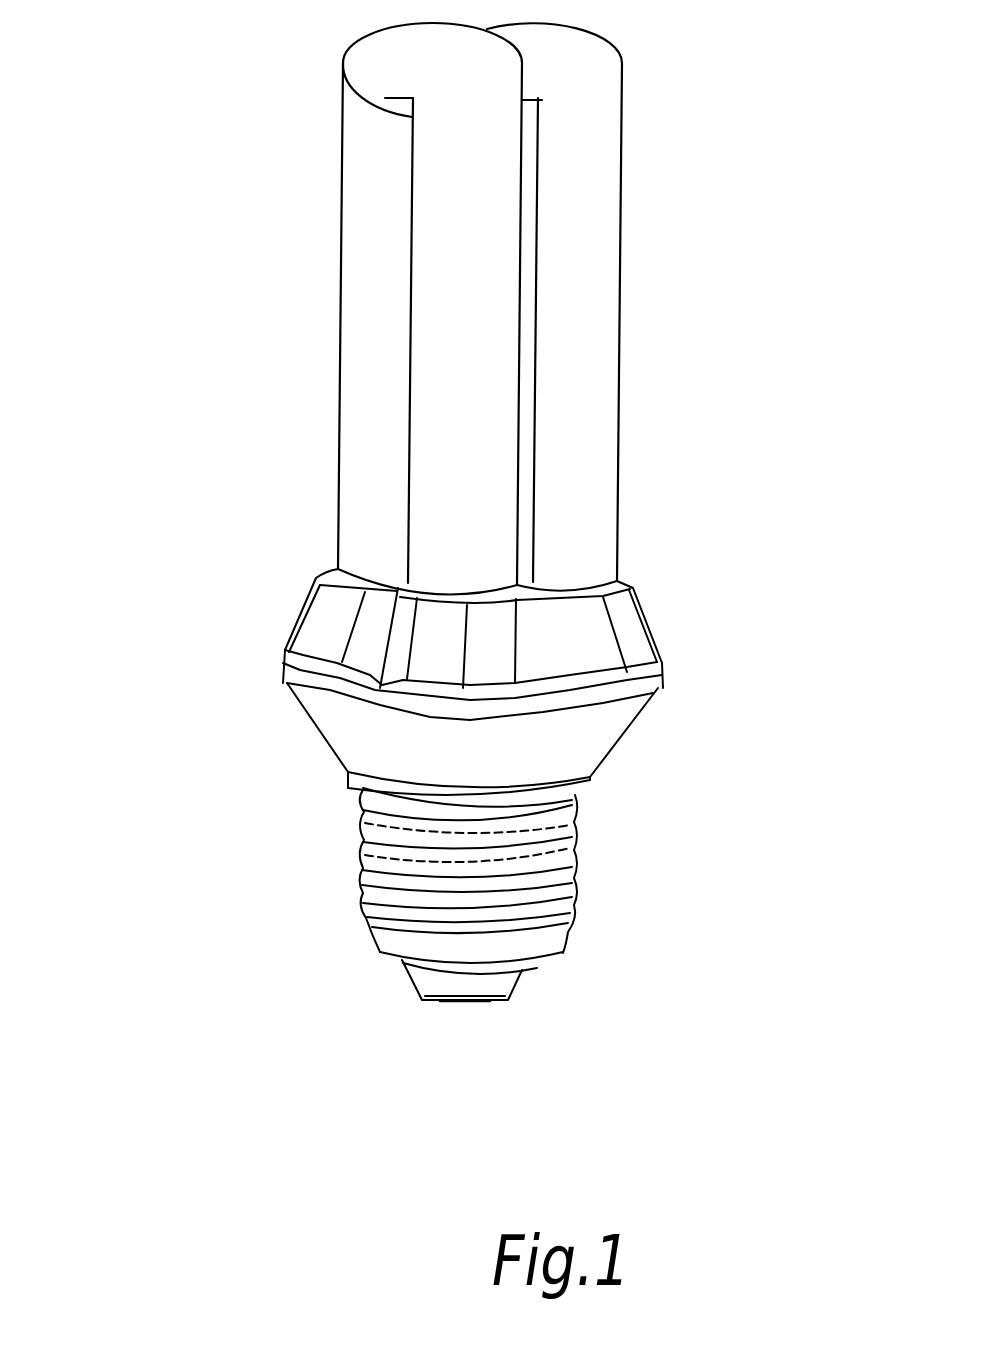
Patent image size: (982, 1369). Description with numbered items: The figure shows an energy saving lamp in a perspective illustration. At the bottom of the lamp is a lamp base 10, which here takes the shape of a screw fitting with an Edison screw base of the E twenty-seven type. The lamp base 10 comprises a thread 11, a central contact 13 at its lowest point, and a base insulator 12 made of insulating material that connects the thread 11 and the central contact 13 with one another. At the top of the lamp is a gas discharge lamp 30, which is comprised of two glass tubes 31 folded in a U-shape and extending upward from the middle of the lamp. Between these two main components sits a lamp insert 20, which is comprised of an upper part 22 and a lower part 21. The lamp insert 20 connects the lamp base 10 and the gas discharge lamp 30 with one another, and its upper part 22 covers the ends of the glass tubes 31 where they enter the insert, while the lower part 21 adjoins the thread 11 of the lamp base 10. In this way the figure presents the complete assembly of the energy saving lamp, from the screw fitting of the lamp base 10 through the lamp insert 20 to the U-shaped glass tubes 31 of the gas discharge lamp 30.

The lamp base 10 is at (450, 980).
The thread 11 is at (578, 870).
The base insulator 12 is at (508, 980).
The central contact 13 is at (468, 1003).
The lamp insert 20 is at (428, 677).
The lower part 21 is at (573, 737).
The upper part 22 is at (577, 627).
The gas discharge lamp 30 is at (436, 303).
The glass tubes 31 is at (463, 145).